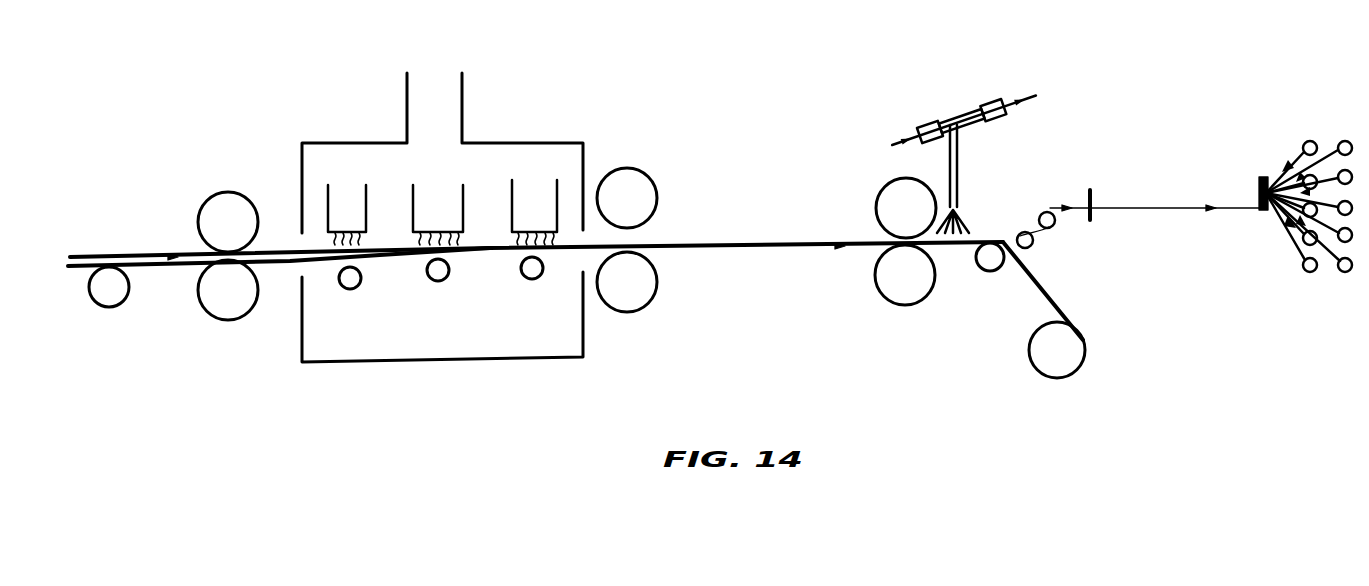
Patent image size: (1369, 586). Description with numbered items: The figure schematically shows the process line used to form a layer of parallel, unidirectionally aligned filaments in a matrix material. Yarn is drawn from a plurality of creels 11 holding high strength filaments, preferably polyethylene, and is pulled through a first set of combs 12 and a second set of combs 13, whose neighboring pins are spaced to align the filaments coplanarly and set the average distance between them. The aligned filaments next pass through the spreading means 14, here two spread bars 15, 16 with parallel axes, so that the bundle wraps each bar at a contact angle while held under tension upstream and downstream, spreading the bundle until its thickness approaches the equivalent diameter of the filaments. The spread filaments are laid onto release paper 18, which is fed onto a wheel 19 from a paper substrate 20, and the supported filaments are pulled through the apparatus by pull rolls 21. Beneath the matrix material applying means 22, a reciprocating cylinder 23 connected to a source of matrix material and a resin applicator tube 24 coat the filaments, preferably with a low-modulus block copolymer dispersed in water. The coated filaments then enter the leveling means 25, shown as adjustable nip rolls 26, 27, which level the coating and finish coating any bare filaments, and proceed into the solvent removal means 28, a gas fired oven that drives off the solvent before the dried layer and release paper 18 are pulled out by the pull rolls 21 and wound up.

The creels 11 is at (1360, 230).
The first set of combs 12 is at (1262, 213).
The second set of combs 13 is at (1092, 220).
The spreading means 14 is at (1032, 244).
The spread bar 15 is at (1050, 212).
The spread bar 16 is at (1021, 233).
The release paper 18 is at (150, 268).
The wheel 19 is at (990, 272).
The paper substrate 20 is at (1085, 362).
The pull rolls 21 is at (200, 212).
The matrix material applying means 22 is at (960, 142).
The reciprocating cylinder 23 is at (963, 105).
The resin applicator tube 24 is at (947, 158).
The leveling means 25 is at (878, 207).
The adjustable nip roll 26 is at (884, 229).
The adjustable nip roll 27 is at (880, 290).
The solvent removal means 28 is at (583, 150).